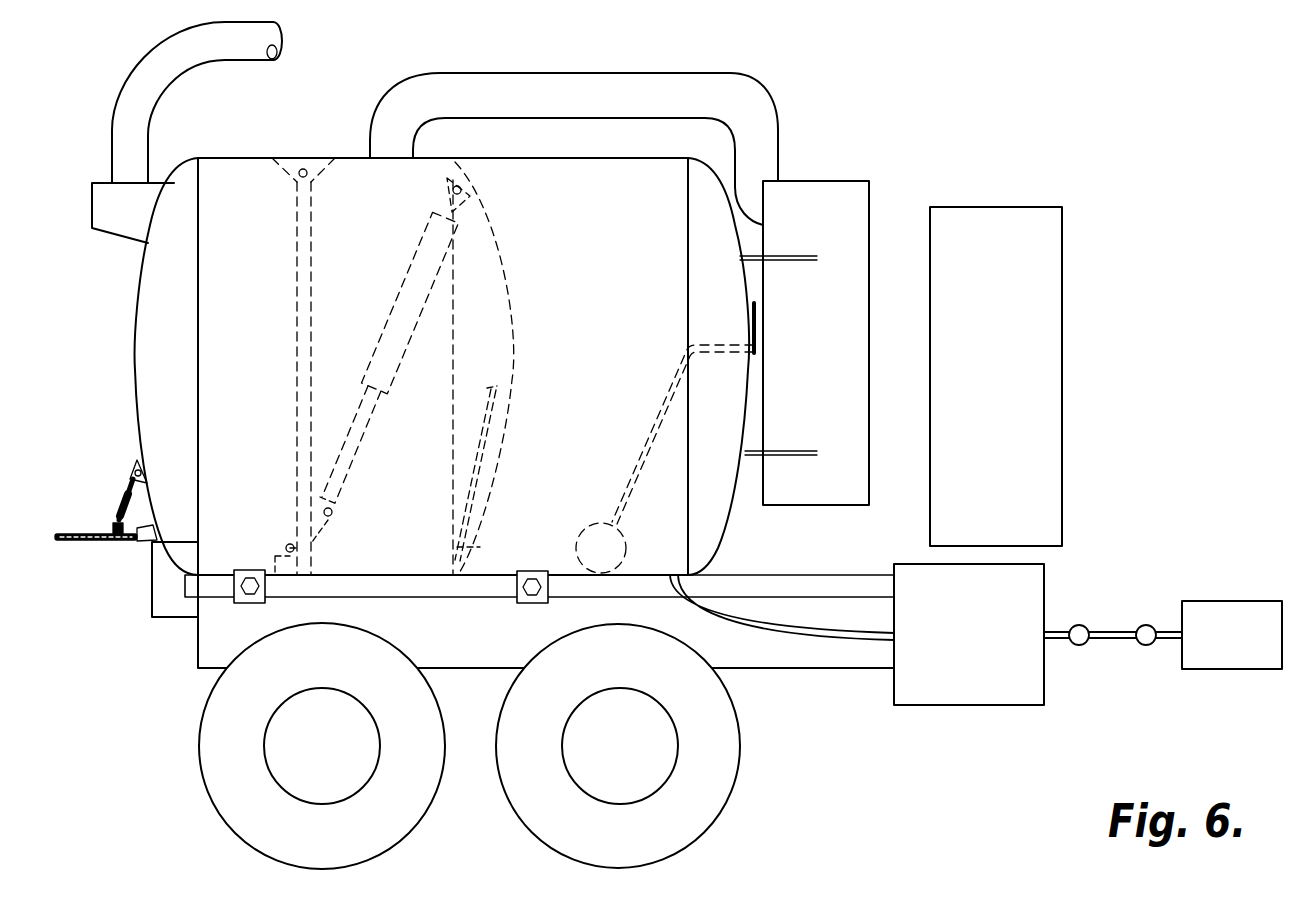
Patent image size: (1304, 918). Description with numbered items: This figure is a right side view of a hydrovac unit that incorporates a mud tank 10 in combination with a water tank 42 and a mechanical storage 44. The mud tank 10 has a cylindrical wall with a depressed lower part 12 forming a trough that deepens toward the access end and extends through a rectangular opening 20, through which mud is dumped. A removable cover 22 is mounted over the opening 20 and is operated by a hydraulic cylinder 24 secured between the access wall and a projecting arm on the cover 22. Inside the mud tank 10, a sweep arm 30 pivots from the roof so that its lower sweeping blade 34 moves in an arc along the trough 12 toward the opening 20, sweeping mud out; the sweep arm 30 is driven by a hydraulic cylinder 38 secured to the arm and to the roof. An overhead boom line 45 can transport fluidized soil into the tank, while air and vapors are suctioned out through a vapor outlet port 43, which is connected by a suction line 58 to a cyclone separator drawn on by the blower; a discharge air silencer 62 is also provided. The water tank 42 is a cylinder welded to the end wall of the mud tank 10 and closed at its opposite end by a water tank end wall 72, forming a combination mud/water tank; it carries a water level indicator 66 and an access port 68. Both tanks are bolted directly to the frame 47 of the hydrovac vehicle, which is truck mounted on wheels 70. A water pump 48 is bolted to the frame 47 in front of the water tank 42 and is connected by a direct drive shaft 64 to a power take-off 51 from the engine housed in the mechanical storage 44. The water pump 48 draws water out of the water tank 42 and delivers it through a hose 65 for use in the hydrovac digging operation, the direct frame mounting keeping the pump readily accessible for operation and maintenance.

The mud tank 10 is at (228, 158).
The depressed lower part 12 is at (172, 618).
The rectangular opening 20 is at (152, 572).
The removable cover 22 is at (95, 534).
The hydraulic cylinder 24 is at (128, 492).
The sweep arm 30 is at (296, 370).
The sweeping blade 34 is at (285, 552).
The hydraulic cylinder 38 is at (400, 284).
The water tank 42 is at (530, 158).
The vapor outlet port 43 is at (375, 130).
The mechanical storage 44 is at (1064, 232).
The overhead boom line 45 is at (133, 70).
The frame 47 is at (808, 667).
The water pump 48 is at (968, 705).
The power take-off 51 is at (1224, 670).
The suction line 58 is at (672, 73).
The discharge air silencer 62 is at (870, 198).
The direct drive shaft 64 is at (1113, 632).
The hose 65 is at (845, 640).
The water level indicator 66 is at (640, 465).
The access port 68 is at (470, 445).
The wheels 70 is at (205, 770).
The water tank end wall 72 is at (732, 520).